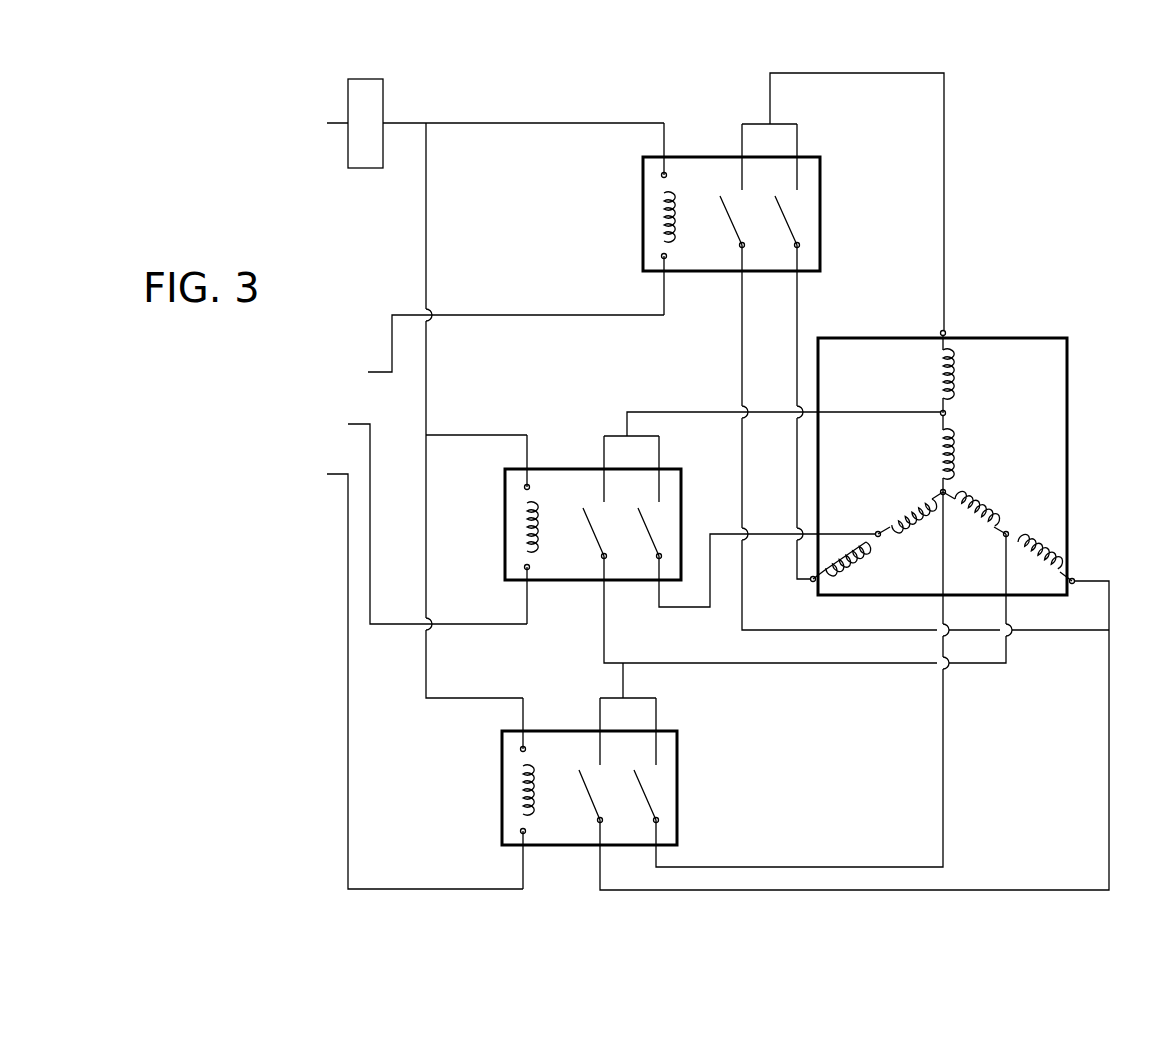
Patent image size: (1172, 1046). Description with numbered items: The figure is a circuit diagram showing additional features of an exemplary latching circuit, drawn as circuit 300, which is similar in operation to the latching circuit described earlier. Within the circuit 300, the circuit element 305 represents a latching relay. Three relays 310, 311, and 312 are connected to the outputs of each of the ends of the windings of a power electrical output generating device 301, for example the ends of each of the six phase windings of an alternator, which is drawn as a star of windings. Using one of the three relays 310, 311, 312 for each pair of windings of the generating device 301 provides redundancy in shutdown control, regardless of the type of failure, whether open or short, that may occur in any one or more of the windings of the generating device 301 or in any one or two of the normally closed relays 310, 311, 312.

The circuit 300 is at (1083, 184).
The generating device 301 is at (1069, 385).
The latching relay 305 is at (349, 100).
The relay 310 is at (678, 786).
The relay 311 is at (568, 469).
The relay 312 is at (643, 215).